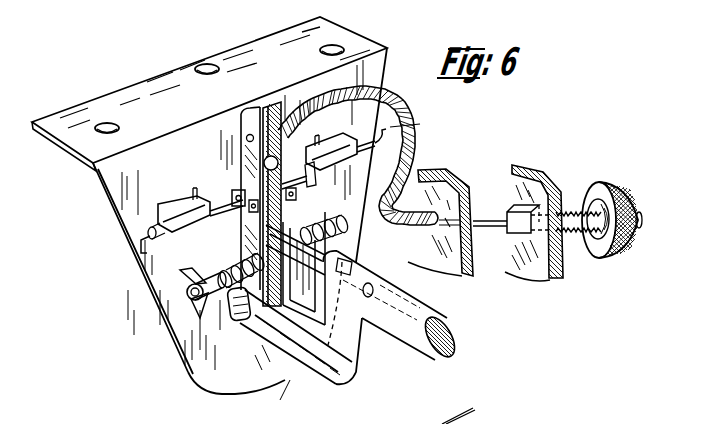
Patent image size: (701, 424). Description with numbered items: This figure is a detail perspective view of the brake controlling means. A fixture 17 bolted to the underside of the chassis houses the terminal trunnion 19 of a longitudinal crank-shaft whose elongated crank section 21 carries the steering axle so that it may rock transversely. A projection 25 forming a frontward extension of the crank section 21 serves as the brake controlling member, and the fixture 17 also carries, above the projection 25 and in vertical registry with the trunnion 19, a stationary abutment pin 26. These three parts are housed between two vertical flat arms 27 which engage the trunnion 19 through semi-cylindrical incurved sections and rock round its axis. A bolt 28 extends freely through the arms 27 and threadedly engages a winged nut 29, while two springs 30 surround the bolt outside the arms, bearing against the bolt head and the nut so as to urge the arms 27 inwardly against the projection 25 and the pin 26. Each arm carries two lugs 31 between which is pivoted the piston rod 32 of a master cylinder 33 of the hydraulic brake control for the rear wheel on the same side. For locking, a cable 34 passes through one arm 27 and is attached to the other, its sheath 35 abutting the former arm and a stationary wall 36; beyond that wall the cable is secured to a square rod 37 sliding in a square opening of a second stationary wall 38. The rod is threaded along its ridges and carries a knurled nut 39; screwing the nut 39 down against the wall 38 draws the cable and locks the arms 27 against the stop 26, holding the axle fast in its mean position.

The fixture 17 is at (115, 178).
The terminal trunnion 19 is at (312, 330).
The crank section 21 is at (398, 318).
The projection 25 is at (305, 268).
The abutment pin 26 is at (265, 162).
The flat arms 27 is at (243, 112).
The bolt 28 is at (344, 251).
The winged nut 29 is at (190, 302).
The springs 30 is at (306, 236).
The lugs 31 is at (238, 195).
The piston rod 32 is at (229, 213).
The master cylinder 33 is at (178, 205).
The cable 34 is at (270, 130).
The sheath 35 is at (338, 107).
The stationary wall 36 is at (426, 190).
The square rod 37 is at (523, 233).
The second stationary wall 38 is at (515, 183).
The knurled nut 39 is at (600, 183).